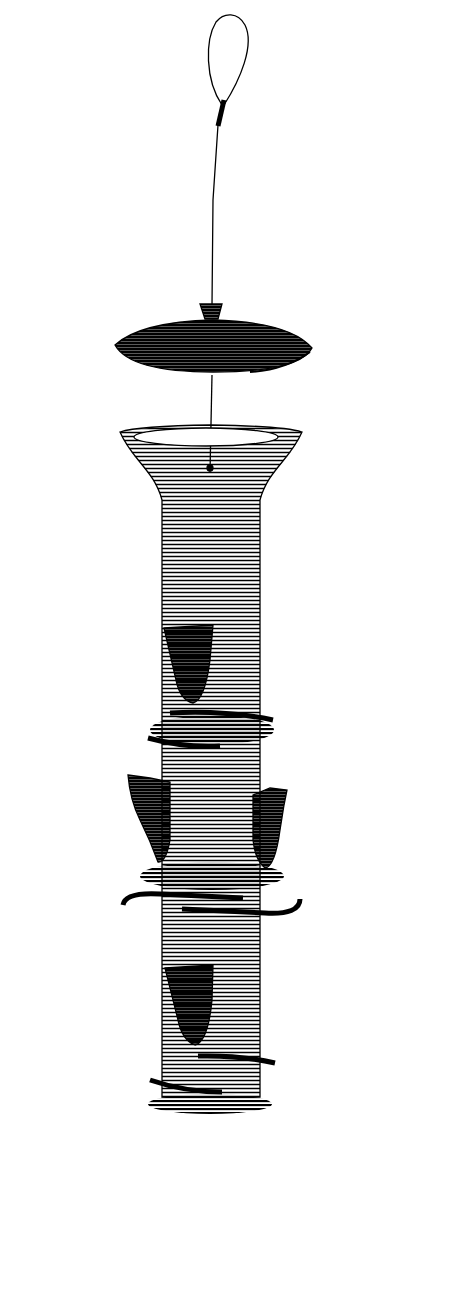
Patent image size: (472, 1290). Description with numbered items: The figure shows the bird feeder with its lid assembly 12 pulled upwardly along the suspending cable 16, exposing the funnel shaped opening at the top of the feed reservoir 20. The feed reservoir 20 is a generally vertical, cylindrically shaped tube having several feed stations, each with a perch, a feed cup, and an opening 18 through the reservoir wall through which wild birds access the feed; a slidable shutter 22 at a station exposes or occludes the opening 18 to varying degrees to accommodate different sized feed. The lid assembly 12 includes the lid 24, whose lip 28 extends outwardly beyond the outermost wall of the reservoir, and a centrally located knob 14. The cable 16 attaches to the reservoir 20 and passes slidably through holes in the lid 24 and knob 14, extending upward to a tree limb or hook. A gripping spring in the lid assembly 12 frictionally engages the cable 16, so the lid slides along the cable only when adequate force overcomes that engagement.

The lid assembly 12 is at (116, 336).
The knob 14 is at (218, 303).
The cable 16 is at (217, 197).
The openings 18 is at (195, 703).
The feed reservoir 20 is at (260, 522).
The slidable shutter 22 is at (289, 790).
The lid 24 is at (290, 333).
The lip 28 is at (296, 358).